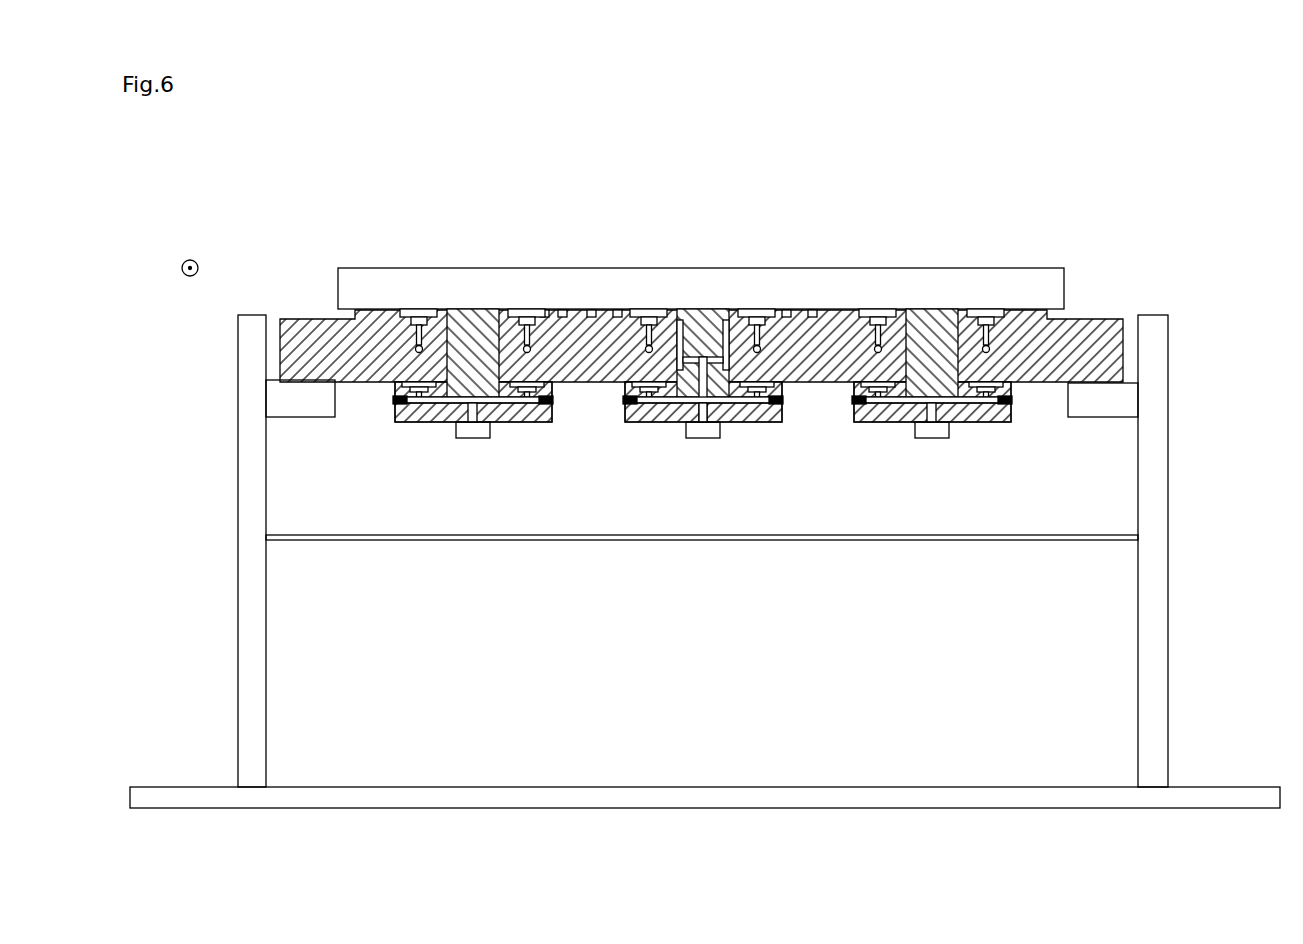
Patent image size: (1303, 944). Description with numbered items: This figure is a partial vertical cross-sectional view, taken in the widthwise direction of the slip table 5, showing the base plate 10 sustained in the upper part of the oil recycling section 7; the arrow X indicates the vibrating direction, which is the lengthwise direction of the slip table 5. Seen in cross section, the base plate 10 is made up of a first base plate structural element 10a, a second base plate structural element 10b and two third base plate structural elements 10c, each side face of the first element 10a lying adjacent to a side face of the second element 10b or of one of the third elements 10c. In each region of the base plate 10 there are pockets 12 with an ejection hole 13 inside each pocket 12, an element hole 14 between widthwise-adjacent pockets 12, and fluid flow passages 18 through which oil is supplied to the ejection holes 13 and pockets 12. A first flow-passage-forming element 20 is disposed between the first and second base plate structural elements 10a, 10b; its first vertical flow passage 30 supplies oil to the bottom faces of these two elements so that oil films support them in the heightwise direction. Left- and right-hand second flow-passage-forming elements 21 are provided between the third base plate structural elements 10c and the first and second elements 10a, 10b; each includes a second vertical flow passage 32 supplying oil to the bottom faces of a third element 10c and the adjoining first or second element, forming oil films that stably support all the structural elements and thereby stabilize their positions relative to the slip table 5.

The vibrating direction X is at (190, 260).
The slip table 5 is at (378, 278).
The oil recycling section 7 is at (236, 389).
The base plate 10 is at (713, 262).
The first base plate structural element 10a is at (605, 307).
The second base plate structural element 10b is at (818, 310).
The third base plate structural element 10c is at (302, 330).
The pocket 12 is at (434, 312).
The ejection hole 13 is at (410, 312).
The element hole 14 is at (460, 340).
The fluid flow passage 18 is at (544, 308).
The first flow-passage-forming element 20 is at (755, 415).
The second flow-passage-forming element 21 is at (410, 414).
The first vertical flow passage 30 is at (660, 416).
The second vertical flow passage 32 is at (513, 414).